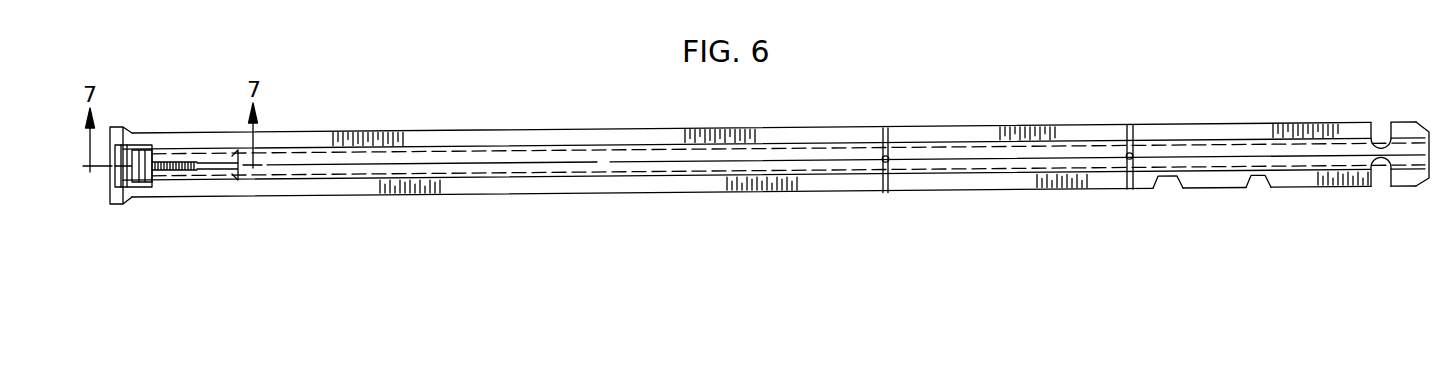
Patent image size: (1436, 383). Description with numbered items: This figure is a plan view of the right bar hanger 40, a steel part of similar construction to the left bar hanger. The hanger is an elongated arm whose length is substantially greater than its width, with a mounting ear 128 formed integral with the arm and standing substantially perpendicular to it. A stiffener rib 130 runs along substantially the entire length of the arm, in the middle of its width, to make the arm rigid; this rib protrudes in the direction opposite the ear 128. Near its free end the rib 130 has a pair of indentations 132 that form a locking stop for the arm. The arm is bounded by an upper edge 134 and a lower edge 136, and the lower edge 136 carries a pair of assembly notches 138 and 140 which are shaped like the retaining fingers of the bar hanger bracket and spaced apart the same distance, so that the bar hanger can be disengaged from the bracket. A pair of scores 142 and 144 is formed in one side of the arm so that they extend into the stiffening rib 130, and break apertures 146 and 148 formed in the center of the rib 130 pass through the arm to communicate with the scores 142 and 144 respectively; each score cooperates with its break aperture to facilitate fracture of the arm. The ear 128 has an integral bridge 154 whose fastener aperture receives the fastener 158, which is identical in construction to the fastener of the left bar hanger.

The right bar hanger 40 is at (377, 202).
The mounting ear 128 is at (116, 200).
The stiffener rib 130 is at (597, 163).
The indentations 132 is at (1381, 141).
The upper edge 134 is at (743, 142).
The lower edge 136 is at (767, 198).
The assembly notch 138 is at (1168, 180).
The assembly notch 140 is at (1259, 178).
The score 142 is at (890, 178).
The score 144 is at (1131, 191).
The break aperture 146 is at (889, 157).
The break aperture 148 is at (1133, 155).
The bridge 154 is at (127, 148).
The fastener 158 is at (236, 140).